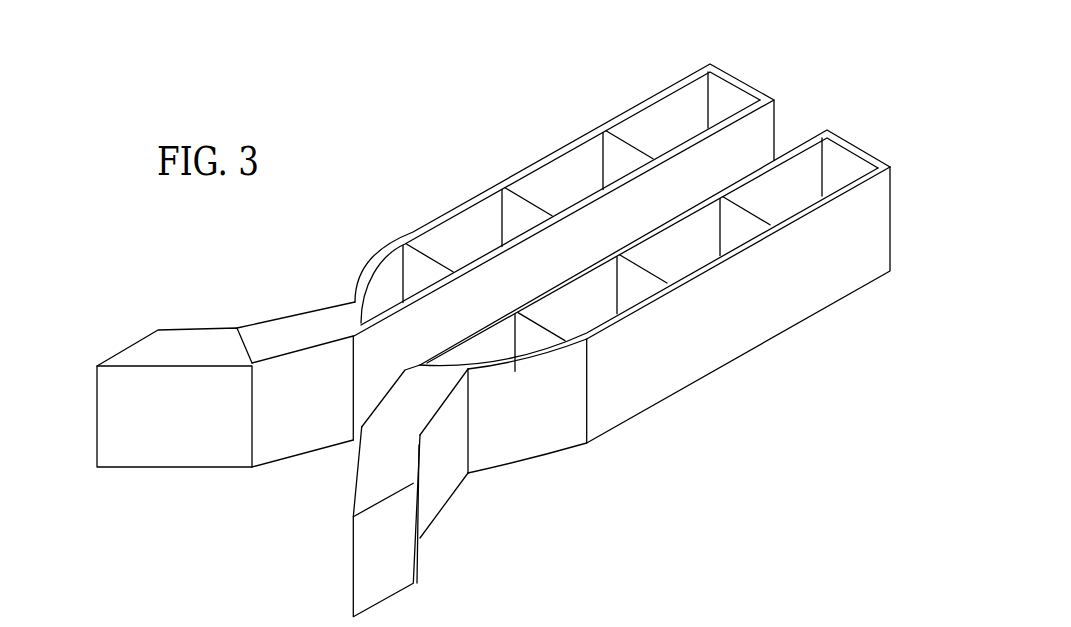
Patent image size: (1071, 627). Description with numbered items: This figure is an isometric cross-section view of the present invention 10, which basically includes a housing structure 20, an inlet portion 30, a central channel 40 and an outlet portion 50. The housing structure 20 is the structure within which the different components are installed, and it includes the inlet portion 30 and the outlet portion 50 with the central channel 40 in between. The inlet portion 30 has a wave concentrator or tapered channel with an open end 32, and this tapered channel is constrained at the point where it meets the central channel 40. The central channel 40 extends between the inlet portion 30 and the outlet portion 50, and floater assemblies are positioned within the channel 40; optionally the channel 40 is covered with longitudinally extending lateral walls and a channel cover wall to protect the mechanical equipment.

The present invention 10 is at (493, 340).
The housing structure 20 is at (760, 292).
The inlet portion 30 is at (267, 343).
The open end 32 is at (180, 353).
The central channel 40 is at (610, 229).
The outlet portion 50 is at (790, 126).